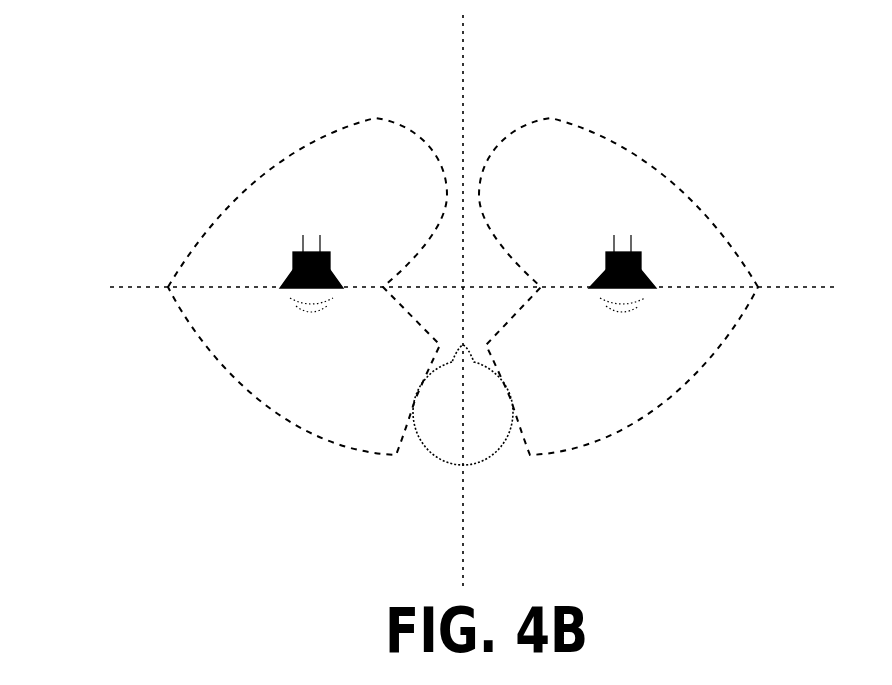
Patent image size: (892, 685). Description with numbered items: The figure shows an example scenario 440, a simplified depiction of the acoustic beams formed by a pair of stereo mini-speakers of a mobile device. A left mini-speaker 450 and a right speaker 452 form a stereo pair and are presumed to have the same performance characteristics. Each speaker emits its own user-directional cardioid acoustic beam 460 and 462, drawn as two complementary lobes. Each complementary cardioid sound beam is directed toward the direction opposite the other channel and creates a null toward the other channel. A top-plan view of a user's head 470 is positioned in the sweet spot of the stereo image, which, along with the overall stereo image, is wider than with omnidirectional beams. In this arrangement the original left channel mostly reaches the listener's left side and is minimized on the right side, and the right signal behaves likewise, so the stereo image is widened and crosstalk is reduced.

The example scenario 440 is at (141, 62).
The left mini-speaker 450 is at (292, 280).
The right speaker 452 is at (640, 258).
The user-directional cardioid acoustic beam 460 is at (272, 160).
The user-directional cardioid acoustic beam 462 is at (620, 137).
The user's head 470 is at (413, 432).